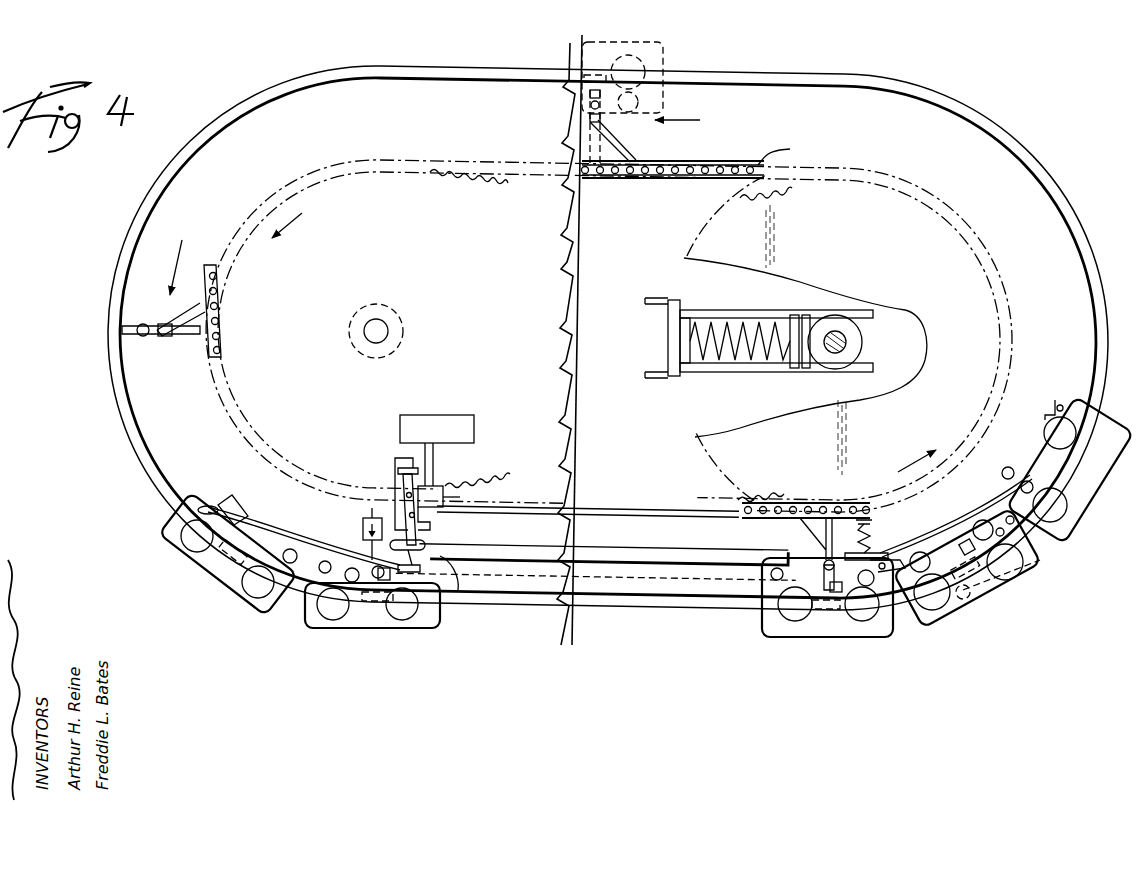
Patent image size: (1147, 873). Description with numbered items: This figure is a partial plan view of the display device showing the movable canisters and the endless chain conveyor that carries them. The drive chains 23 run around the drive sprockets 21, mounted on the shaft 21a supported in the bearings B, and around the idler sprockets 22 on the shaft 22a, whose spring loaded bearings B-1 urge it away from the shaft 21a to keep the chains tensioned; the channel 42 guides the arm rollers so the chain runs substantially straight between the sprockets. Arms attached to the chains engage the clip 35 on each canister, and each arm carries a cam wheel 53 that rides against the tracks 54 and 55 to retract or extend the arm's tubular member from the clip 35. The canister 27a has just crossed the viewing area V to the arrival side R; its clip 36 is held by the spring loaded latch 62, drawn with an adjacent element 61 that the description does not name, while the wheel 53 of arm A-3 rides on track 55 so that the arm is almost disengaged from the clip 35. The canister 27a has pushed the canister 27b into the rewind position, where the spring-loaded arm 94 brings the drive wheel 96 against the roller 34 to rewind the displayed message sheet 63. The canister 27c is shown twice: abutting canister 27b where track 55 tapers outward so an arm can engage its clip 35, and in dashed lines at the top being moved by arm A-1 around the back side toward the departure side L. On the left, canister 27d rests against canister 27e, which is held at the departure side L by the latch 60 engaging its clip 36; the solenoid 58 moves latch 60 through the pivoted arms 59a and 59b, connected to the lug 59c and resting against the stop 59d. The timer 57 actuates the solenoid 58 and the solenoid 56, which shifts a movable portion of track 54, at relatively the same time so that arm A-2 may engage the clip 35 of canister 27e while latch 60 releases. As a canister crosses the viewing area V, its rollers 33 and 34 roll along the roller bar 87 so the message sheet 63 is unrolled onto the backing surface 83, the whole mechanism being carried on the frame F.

The drive sprockets 21 is at (495, 216).
The shaft 21a is at (382, 320).
The idler sprockets 22 is at (732, 200).
The shaft 22a is at (847, 342).
The drive chains 23 is at (665, 155).
The canister 27a is at (813, 640).
The canister 27b is at (950, 622).
The canister 27c is at (665, 48).
The canister 27d is at (218, 586).
The canister 27e is at (375, 633).
The roller 33 is at (880, 640).
The roller 34 is at (778, 638).
The clip 35 is at (1043, 456).
The clip 36 is at (452, 585).
The channel 42 is at (786, 152).
The cam wheel 53 is at (790, 556).
The track 54 is at (272, 514).
The track 55 is at (920, 556).
The solenoid 56 is at (360, 530).
The timer 57 is at (440, 414).
The solenoid 58 is at (447, 500).
The arm 59a is at (406, 490).
The arm 59b is at (408, 478).
The lug 59c is at (396, 460).
The stop 59d is at (425, 523).
The latch 60 is at (432, 546).
The latch 61 is at (892, 563).
The spring loaded latch 62 is at (873, 548).
The message sheet 63 is at (684, 588).
The backing surface 83 is at (620, 560).
The roller bar 87 is at (626, 582).
The spring-loaded arm 94 is at (1041, 572).
The drive wheel 96 is at (975, 608).
The arm A-1 is at (612, 141).
The arm A-2 is at (186, 340).
The arm A-3 is at (810, 538).
The bearings B is at (406, 324).
The spring loaded bearings B-1 is at (753, 310).
The frame F is at (660, 326).
The departure side L is at (443, 632).
The arrival side R is at (727, 632).
The viewing area V is at (541, 650).